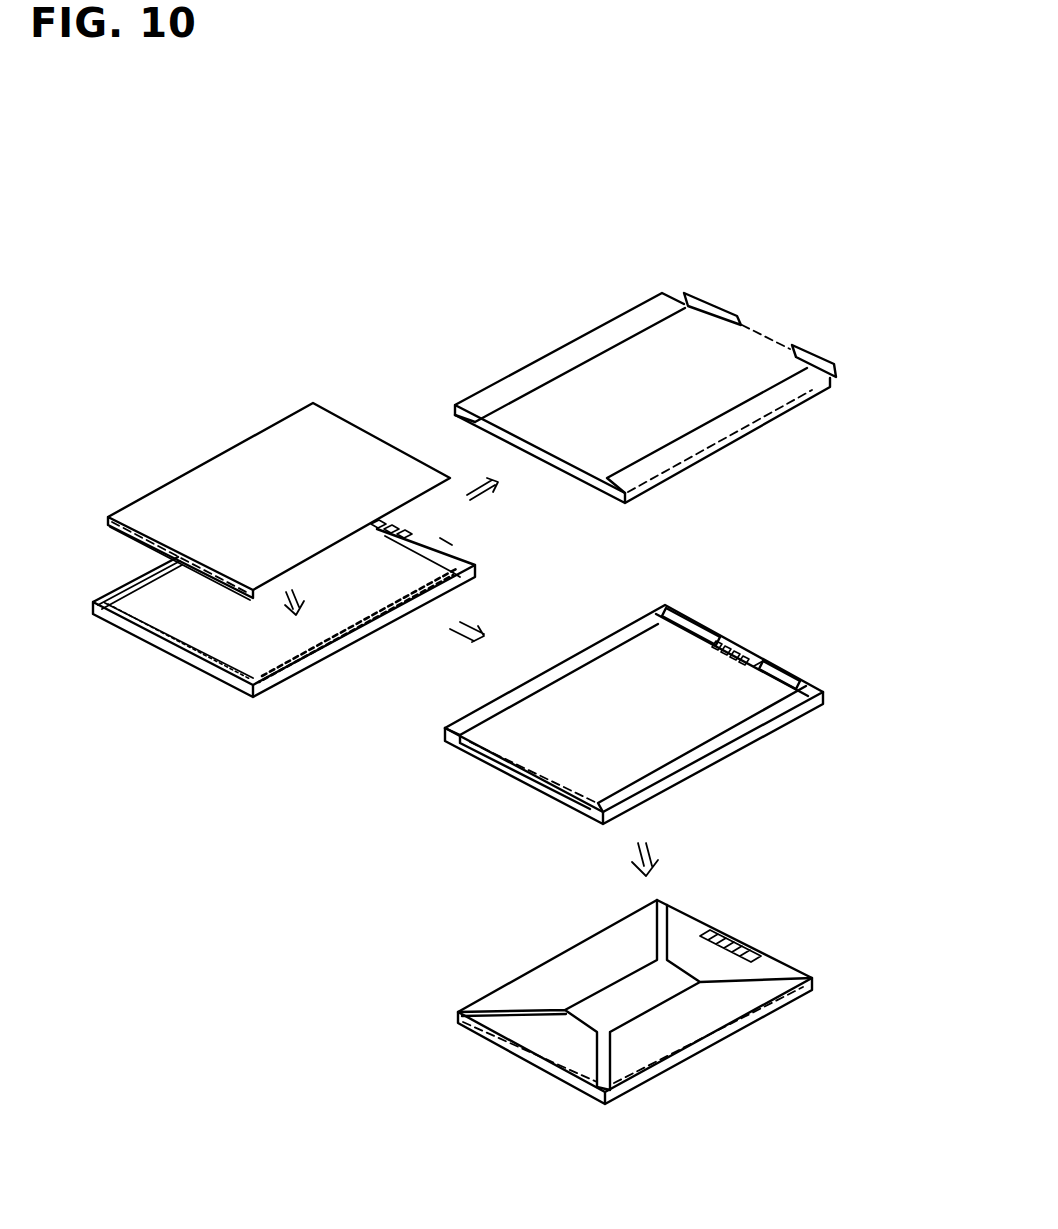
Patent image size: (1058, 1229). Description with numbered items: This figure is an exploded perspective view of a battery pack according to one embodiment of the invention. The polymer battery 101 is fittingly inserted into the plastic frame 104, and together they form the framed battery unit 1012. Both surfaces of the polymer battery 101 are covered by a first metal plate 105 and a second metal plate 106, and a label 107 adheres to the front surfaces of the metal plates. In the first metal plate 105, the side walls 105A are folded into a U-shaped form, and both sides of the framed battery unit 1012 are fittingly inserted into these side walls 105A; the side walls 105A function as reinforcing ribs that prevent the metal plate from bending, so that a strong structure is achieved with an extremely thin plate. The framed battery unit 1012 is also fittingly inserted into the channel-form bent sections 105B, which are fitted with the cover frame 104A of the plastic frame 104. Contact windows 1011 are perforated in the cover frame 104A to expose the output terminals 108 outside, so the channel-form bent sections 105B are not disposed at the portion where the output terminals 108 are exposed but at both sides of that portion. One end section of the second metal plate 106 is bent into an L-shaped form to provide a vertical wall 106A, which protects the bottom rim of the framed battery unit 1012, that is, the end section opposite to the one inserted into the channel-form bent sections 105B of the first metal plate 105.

The polymer battery 101 is at (247, 655).
The plastic frame 104 is at (327, 653).
The cover frame 104A is at (452, 560).
The first metal plate 105 is at (570, 470).
The side walls 105A is at (570, 357).
The channel-form bent sections 105B is at (703, 310).
The second metal plate 106 is at (233, 467).
The vertical wall 106A is at (202, 573).
The label 107 is at (555, 973).
The output terminals 108 is at (392, 535).
The contact windows 1011 is at (408, 528).
The framed battery unit 1012 is at (158, 690).